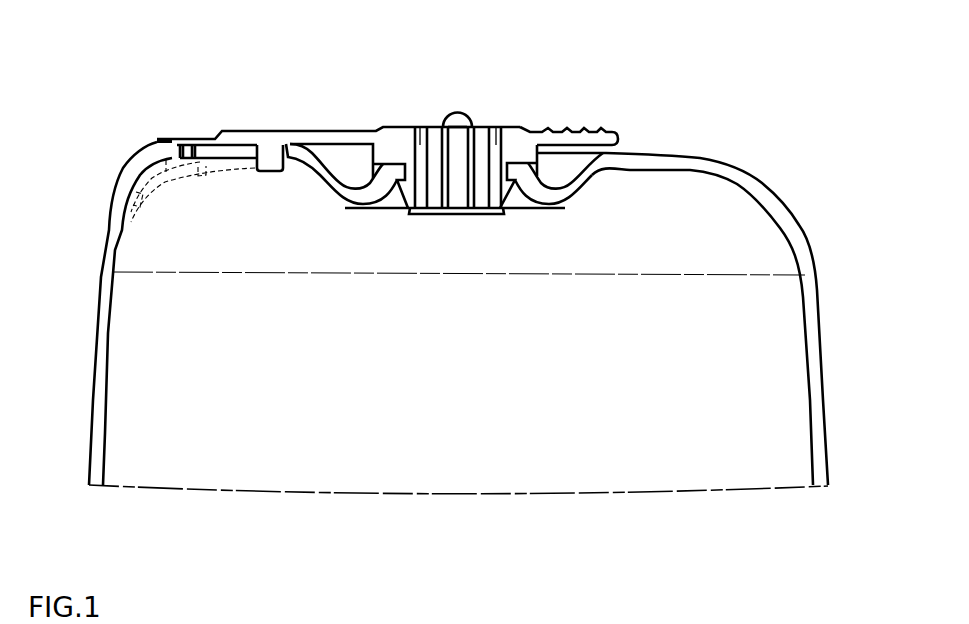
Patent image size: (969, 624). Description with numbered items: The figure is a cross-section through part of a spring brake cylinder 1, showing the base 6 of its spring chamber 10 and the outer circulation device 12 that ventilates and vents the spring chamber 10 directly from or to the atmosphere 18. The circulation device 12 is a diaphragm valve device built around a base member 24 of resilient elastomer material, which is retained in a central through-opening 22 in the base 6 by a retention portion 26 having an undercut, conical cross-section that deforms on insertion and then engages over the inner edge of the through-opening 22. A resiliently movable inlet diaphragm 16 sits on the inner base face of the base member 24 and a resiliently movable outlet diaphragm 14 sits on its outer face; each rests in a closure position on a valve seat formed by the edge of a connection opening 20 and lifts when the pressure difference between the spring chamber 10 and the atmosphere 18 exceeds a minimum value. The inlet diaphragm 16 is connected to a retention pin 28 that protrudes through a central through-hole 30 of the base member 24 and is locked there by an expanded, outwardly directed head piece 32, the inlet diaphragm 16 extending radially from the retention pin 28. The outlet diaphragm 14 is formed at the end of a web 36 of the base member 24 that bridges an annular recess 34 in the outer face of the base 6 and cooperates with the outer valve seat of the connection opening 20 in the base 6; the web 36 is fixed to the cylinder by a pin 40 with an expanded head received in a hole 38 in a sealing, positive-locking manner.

The spring brake cylinder 1 is at (775, 118).
The base 6 is at (680, 160).
The spring chamber 10 is at (680, 339).
The circulation device 12 is at (500, 73).
The outlet diaphragm 14 is at (167, 140).
The inlet diaphragm 16 is at (434, 214).
The atmosphere 18 is at (345, 51).
The connection opening 20 is at (423, 143).
The central through-opening 22 is at (452, 262).
The base member 24 is at (536, 132).
The retention portion 26 is at (403, 193).
The retention pin 28 is at (457, 193).
The central through-hole 30 is at (456, 110).
The head piece 32 is at (472, 126).
The annular recess 34 is at (350, 168).
The web 36 is at (245, 131).
The hole 38 is at (251, 175).
The pin 40 is at (268, 167).